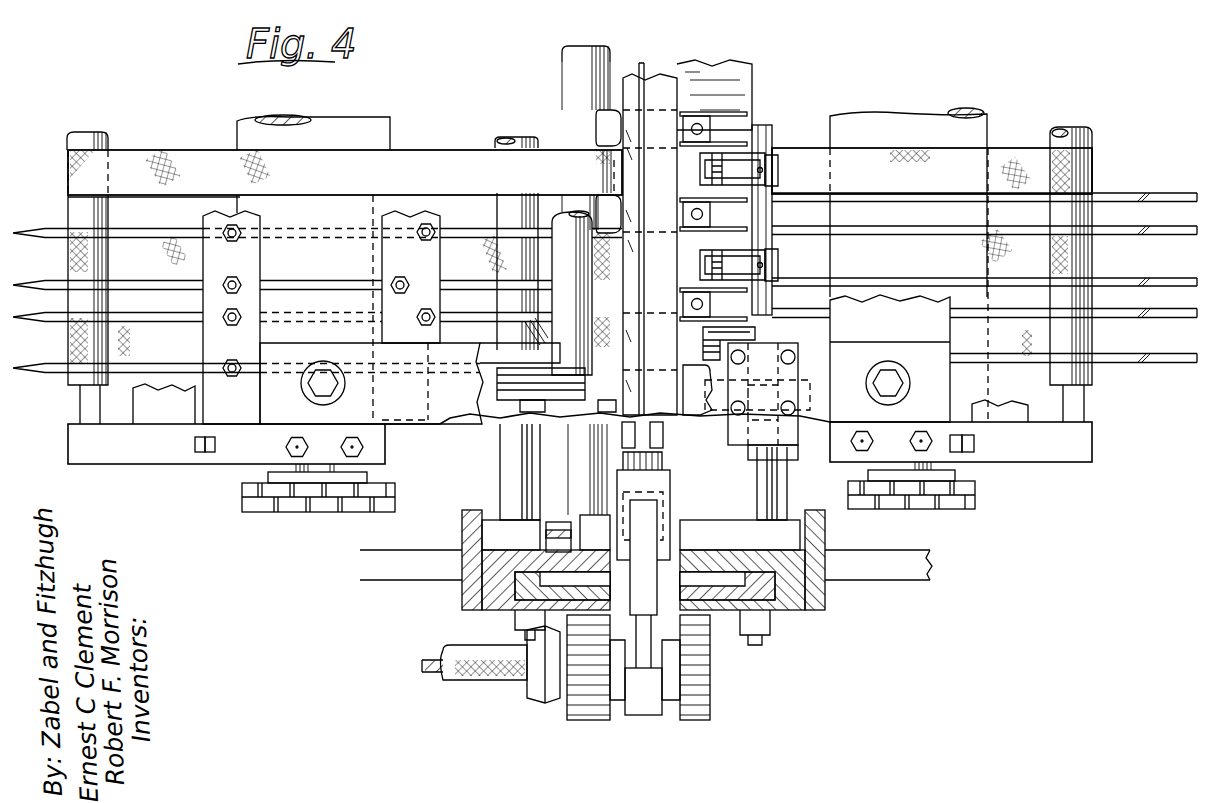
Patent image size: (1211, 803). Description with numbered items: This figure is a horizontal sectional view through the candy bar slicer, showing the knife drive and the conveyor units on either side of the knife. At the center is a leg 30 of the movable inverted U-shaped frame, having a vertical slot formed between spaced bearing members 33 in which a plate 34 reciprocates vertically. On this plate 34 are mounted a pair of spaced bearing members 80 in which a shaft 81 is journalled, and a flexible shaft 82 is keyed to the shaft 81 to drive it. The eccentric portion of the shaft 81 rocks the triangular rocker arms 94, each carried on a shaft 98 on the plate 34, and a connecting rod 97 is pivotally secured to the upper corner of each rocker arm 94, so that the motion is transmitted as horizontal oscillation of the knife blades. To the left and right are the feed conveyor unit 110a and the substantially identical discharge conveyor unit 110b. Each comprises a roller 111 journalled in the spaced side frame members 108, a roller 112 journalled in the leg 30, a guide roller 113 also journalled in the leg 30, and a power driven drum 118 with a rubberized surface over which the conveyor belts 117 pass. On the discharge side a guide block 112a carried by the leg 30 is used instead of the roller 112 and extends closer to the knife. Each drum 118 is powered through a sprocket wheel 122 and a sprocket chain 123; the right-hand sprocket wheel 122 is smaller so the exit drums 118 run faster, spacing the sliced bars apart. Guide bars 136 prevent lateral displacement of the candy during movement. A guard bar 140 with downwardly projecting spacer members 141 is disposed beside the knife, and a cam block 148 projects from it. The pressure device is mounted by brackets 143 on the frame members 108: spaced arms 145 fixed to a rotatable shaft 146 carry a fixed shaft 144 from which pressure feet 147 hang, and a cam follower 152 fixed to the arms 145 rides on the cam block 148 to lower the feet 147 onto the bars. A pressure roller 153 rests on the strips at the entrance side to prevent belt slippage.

The leg 30 is at (834, 612).
The bearing members 33 is at (520, 612).
The plate 34 is at (720, 612).
The bearing members 80 is at (595, 720).
The shaft 81 is at (672, 662).
The flexible shaft 82 is at (440, 672).
The rocker arms 94 is at (650, 548).
The connecting rod 97 is at (662, 470).
The shaft 98 is at (570, 522).
The side frame members 108 is at (205, 465).
The conveyor unit 110a is at (172, 140).
The conveyor unit 110b is at (1008, 122).
The roller 111 is at (110, 144).
The roller 112 is at (562, 92).
The guide block 112a is at (752, 84).
The guide roller 113 is at (500, 484).
The conveyor belts 117 is at (200, 152).
The power driven drum 118 is at (356, 120).
The sprocket wheel 122 is at (268, 476).
The sprocket chain 123 is at (290, 512).
The guide bars 136 is at (1156, 193).
The guard bar 140 is at (641, 63).
The spacer members 141 is at (596, 126).
The brackets 143 is at (790, 460).
The shaft 144 is at (705, 172).
The arms 145 is at (778, 172).
The rotatable shaft 146 is at (775, 132).
The pressure feet 147 is at (705, 255).
The cam block 148 is at (695, 392).
The cam follower 152 is at (735, 458).
The pressure roller 153 is at (560, 214).